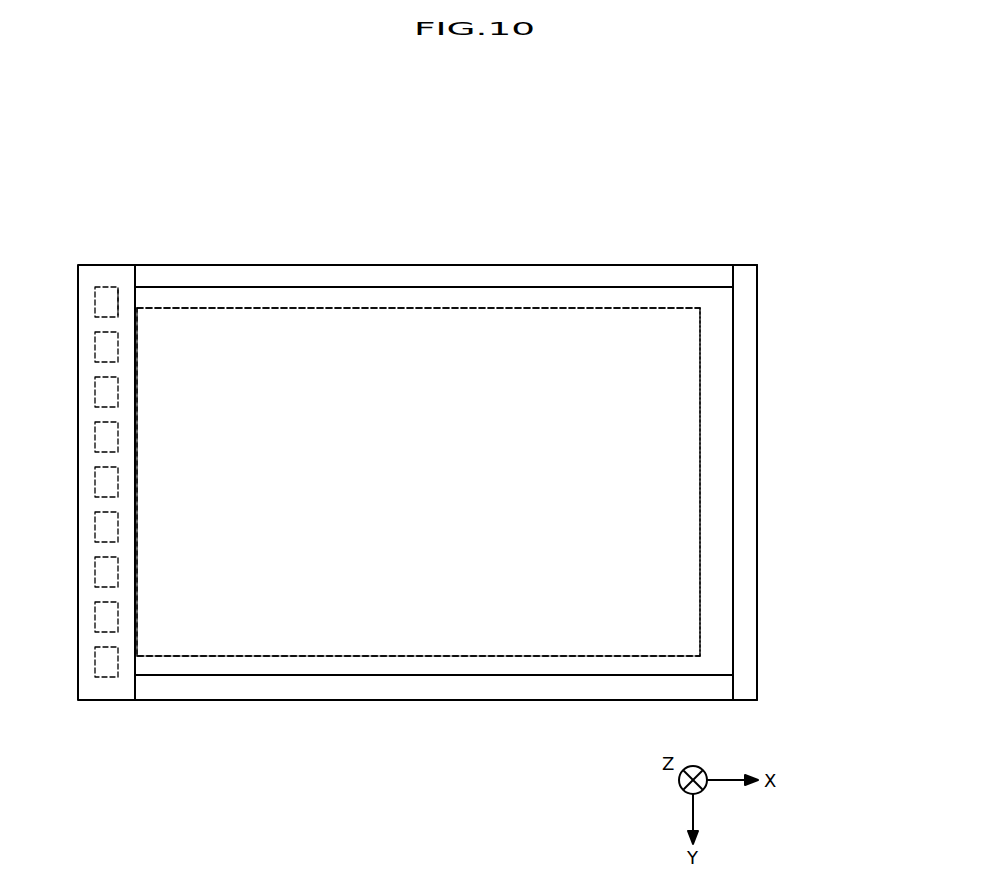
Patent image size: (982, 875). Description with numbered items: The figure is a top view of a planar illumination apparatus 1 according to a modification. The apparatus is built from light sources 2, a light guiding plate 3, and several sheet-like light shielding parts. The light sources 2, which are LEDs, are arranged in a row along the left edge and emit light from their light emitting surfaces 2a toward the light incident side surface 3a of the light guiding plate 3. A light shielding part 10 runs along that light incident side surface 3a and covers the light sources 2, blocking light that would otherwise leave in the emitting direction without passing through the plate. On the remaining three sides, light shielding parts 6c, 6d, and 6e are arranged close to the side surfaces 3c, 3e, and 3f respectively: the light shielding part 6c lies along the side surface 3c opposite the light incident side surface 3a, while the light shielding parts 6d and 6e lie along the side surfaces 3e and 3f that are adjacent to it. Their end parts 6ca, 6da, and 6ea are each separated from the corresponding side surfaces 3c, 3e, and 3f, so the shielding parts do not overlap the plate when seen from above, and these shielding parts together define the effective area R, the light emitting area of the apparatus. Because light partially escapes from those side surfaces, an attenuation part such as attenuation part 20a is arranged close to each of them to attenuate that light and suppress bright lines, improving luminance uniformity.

The planar illumination apparatus 1 is at (127, 158).
The light sources 2 is at (95, 300).
The light emitting surfaces 2a is at (120, 300).
The light shielding part 10 is at (112, 272).
The light guiding plate 3 is at (525, 308).
The light incident side surface 3a is at (140, 326).
The side surface 3c is at (700, 412).
The side surface 3e is at (590, 308).
The side surface 3f is at (507, 657).
The light shielding part 6c is at (745, 272).
The end part 6ca is at (733, 324).
The light shielding part 6d is at (308, 272).
The end part 6da is at (355, 288).
The light shielding part 6e is at (307, 690).
The end part 6ea is at (413, 674).
The effective area R is at (433, 292).
The attenuation part 20a is at (718, 557).